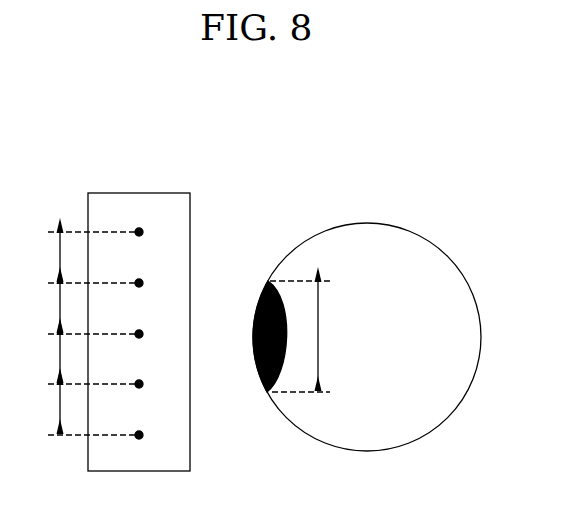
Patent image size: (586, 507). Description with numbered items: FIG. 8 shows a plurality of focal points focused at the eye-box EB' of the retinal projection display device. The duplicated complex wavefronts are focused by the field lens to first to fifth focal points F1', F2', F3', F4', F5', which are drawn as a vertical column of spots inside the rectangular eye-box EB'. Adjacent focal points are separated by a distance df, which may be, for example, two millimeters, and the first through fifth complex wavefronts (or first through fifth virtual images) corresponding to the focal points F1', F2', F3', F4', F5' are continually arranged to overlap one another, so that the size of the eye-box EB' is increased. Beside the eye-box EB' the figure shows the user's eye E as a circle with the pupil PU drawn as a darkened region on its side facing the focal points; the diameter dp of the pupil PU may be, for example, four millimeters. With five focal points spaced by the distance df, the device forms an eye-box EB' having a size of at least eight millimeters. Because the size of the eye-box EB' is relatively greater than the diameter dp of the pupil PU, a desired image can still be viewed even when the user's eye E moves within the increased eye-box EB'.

The eye-box EB' is at (139, 302).
The first focal point F1' is at (159, 435).
The second focal point F2' is at (159, 384).
The third focal point F3' is at (159, 334).
The fourth focal point F4' is at (159, 283).
The fifth focal point F5' is at (159, 232).
The distance between adjacent focal points df is at (46, 333).
The user's eye E is at (470, 335).
The pupil PU is at (263, 380).
The diameter of the pupil dp is at (308, 336).